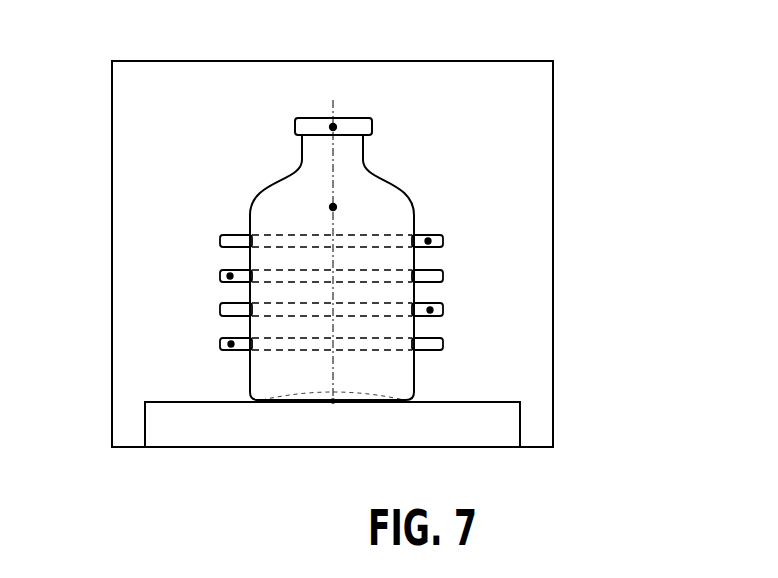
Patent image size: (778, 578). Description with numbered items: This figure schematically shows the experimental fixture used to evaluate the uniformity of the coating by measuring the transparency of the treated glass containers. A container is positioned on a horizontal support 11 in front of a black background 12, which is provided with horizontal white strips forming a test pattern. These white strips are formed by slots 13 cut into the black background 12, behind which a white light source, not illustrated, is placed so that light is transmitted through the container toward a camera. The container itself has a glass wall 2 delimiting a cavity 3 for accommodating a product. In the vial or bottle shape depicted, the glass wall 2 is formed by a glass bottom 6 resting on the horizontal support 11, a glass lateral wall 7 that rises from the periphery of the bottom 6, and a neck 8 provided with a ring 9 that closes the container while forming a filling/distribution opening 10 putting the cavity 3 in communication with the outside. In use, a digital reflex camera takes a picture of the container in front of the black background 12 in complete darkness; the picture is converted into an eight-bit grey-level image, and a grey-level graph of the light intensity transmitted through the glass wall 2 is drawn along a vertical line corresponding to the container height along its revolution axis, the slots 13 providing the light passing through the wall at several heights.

The glass wall 2 is at (413, 210).
The cavity 3 is at (329, 207).
The glass bottom 6 is at (333, 401).
The glass lateral wall 7 is at (416, 292).
The neck 8 is at (303, 152).
The ring 9 is at (295, 125).
The filling/distribution opening 10 is at (334, 124).
The horizontal support 11 is at (173, 427).
The black background 12 is at (500, 368).
The slots 13 is at (432, 241).